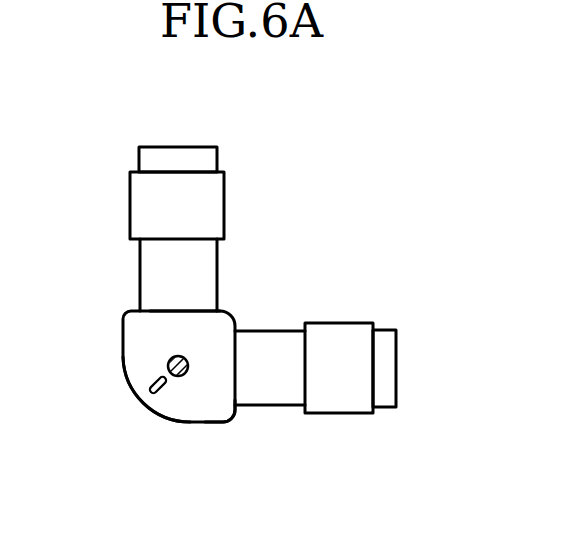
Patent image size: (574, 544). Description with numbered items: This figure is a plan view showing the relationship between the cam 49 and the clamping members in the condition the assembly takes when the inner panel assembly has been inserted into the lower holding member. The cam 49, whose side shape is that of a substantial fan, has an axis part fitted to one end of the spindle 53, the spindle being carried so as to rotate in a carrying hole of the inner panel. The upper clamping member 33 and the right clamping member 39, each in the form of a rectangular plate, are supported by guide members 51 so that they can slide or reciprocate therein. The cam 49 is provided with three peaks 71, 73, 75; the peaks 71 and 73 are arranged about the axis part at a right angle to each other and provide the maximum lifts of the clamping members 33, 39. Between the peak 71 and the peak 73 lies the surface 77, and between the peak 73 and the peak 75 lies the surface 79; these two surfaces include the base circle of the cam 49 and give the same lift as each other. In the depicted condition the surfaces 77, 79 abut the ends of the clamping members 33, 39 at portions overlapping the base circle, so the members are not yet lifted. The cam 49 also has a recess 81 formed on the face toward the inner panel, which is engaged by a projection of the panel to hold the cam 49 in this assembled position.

The upper clamping member 33 is at (173, 147).
The guide member 51 is at (224, 192).
The surface 77 is at (155, 310).
The peak 71 is at (122, 315).
The peak 73 is at (232, 309).
The surface 79 is at (238, 358).
The right clamping member 39 is at (388, 357).
The spindle 53 is at (168, 362).
The recess 81 is at (145, 393).
The cam 49 is at (185, 415).
The peak 75 is at (233, 423).